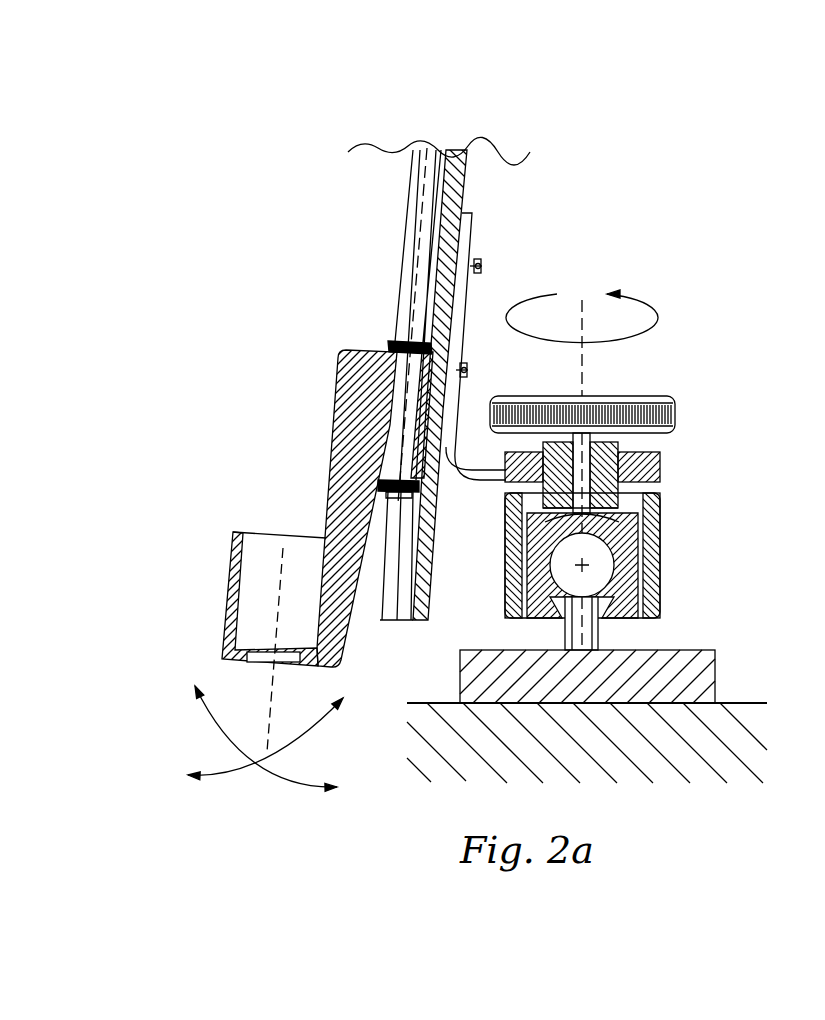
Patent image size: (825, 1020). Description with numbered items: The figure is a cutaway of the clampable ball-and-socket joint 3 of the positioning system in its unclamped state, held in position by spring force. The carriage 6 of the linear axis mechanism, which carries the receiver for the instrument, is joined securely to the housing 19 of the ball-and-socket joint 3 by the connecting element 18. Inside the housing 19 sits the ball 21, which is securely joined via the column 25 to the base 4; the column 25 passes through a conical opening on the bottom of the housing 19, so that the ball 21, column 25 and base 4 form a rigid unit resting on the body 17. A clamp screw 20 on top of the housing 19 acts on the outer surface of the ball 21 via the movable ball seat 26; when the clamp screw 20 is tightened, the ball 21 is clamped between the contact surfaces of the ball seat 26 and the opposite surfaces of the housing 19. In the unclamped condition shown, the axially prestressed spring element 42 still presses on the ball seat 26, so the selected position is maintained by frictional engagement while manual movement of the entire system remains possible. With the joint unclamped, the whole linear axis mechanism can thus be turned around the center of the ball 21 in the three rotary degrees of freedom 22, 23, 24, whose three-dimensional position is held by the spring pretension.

The clampable ball-and-socket joint 3 is at (714, 447).
The base 4 is at (707, 672).
The carriage 6 is at (340, 462).
The body 17 is at (740, 712).
The connecting element 18 is at (467, 230).
The housing 19 is at (655, 598).
The clamp screw 20 is at (675, 406).
The ball 21 is at (600, 583).
The rotary degree of freedom 22 is at (245, 742).
The rotary degree of freedom 23 is at (247, 724).
The rotary degree of freedom 24 is at (582, 307).
The column 25 is at (588, 640).
The movable ball seat 26 is at (623, 533).
The spring element 42 is at (620, 510).